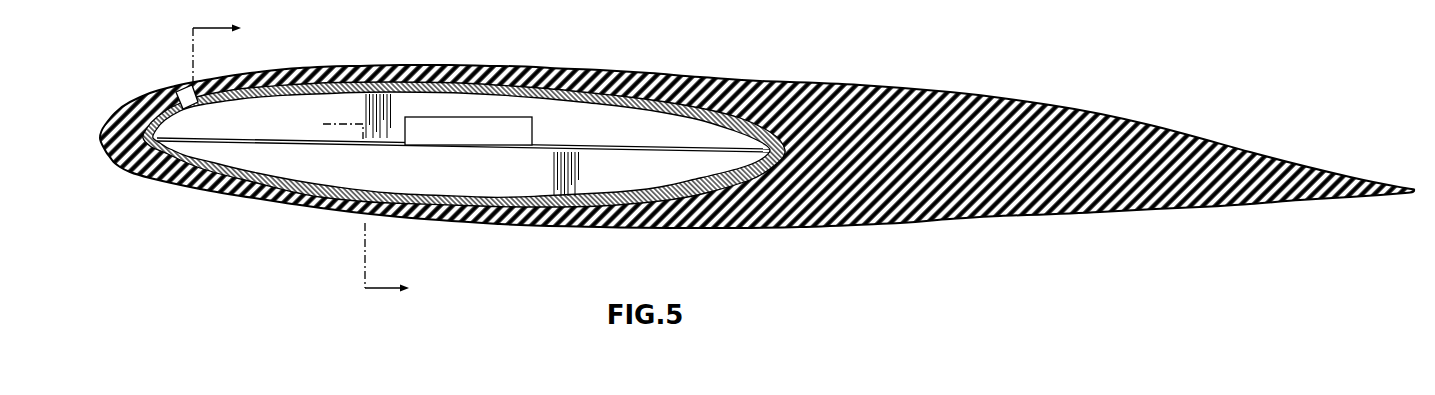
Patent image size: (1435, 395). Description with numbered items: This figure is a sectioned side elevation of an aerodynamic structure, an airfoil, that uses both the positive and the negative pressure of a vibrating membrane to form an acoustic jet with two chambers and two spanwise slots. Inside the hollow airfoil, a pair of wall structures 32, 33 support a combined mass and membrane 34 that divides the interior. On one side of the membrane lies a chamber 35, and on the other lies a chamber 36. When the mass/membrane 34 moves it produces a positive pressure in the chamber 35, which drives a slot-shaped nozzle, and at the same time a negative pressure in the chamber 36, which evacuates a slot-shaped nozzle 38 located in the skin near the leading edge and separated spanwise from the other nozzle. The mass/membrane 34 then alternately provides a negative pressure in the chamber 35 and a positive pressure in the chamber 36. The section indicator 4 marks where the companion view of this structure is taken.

The wall structure 32 is at (291, 134).
The wall structure 33 is at (293, 172).
The combined mass and membrane 34 is at (538, 140).
The chamber 35 is at (491, 194).
The chamber 36 is at (457, 100).
The slot-shaped nozzle 38 is at (188, 88).
The section line 4 is at (310, 159).